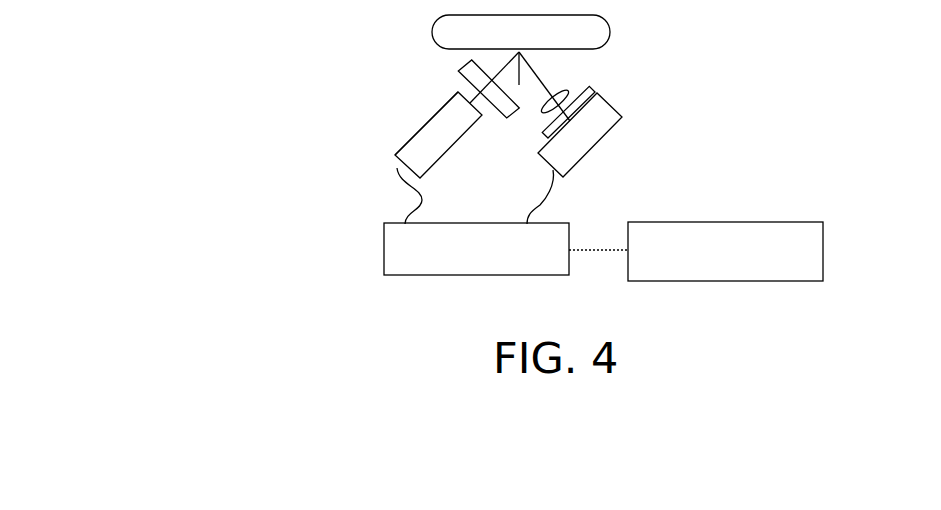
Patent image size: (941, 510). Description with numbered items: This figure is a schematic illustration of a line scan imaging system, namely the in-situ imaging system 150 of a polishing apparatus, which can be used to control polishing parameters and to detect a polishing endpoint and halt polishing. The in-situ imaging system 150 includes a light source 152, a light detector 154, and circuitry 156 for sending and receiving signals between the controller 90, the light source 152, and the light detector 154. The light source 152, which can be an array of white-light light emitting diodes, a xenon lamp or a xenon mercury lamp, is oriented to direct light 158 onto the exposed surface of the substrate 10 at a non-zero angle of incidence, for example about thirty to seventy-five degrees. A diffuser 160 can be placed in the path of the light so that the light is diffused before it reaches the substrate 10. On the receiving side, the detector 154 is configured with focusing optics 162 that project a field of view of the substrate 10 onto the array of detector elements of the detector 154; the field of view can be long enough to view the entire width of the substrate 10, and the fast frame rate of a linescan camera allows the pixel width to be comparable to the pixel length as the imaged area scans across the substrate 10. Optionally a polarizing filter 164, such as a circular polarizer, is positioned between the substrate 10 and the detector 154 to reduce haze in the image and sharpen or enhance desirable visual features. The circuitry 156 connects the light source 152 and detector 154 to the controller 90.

The substrate 10 is at (521, 32).
The controller 90 is at (823, 250).
The in-situ imaging system 150 is at (342, 150).
The light source 152 is at (438, 135).
The light detector 154 is at (580, 135).
The circuitry 156 is at (476, 249).
The light 158 is at (458, 92).
The diffuser 160 is at (460, 71).
The focusing optics 162 is at (566, 86).
The polarizing filter 164 is at (594, 88).